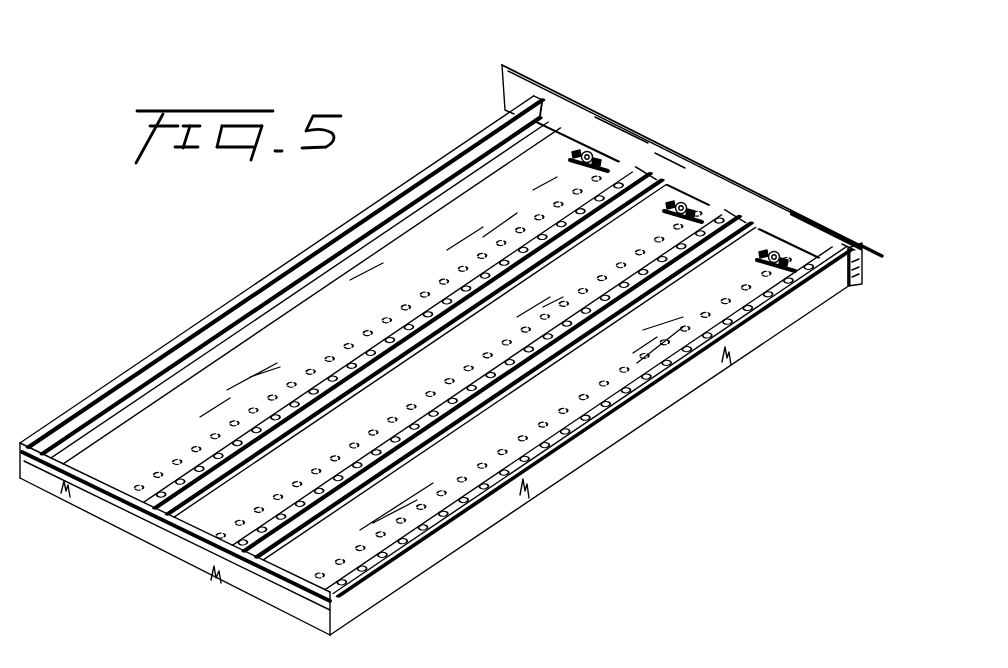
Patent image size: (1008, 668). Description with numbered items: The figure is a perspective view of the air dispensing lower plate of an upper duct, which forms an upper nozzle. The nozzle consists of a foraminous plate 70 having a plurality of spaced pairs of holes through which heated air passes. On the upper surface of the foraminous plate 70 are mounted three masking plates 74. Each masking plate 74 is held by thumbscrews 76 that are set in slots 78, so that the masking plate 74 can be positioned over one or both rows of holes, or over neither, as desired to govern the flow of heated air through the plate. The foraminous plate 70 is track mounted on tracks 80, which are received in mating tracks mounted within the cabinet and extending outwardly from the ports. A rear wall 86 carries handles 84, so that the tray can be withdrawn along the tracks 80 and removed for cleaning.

The foraminous plate 70 is at (740, 220).
The masking plate 74 is at (536, 432).
The thumbscrew 76 is at (589, 152).
The slot 78 is at (605, 145).
The track 80 is at (302, 252).
The handle 84 is at (864, 283).
The rear wall 86 is at (862, 240).